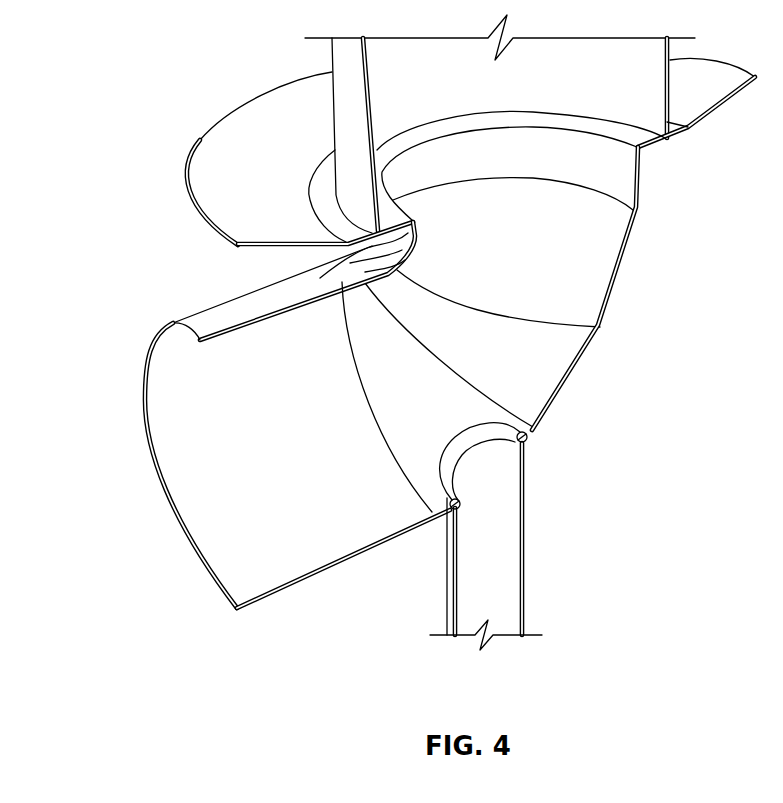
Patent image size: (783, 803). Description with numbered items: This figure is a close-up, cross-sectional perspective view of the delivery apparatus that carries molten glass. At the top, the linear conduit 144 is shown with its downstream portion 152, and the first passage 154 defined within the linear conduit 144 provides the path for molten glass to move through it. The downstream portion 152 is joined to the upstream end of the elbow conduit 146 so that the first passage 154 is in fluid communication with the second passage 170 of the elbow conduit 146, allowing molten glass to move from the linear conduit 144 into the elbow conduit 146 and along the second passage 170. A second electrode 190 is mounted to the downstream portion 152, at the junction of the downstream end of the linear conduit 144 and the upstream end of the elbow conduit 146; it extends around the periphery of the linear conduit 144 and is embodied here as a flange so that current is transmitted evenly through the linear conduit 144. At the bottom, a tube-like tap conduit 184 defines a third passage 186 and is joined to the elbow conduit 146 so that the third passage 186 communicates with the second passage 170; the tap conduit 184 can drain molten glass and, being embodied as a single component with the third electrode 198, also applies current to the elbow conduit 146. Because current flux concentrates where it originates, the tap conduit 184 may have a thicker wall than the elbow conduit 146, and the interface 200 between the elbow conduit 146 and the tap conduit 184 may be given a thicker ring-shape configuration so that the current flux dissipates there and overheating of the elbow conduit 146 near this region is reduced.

The linear conduit 144 is at (352, 60).
The elbow conduit 146 is at (577, 372).
The downstream portion 152 is at (253, 147).
The first passage 154 is at (598, 88).
The second passage 170 is at (325, 454).
The tap conduit 184 is at (373, 567).
The third passage 186 is at (512, 571).
The second electrode 190 is at (722, 105).
The third electrode 198 is at (455, 504).
The interface 200 is at (530, 440).